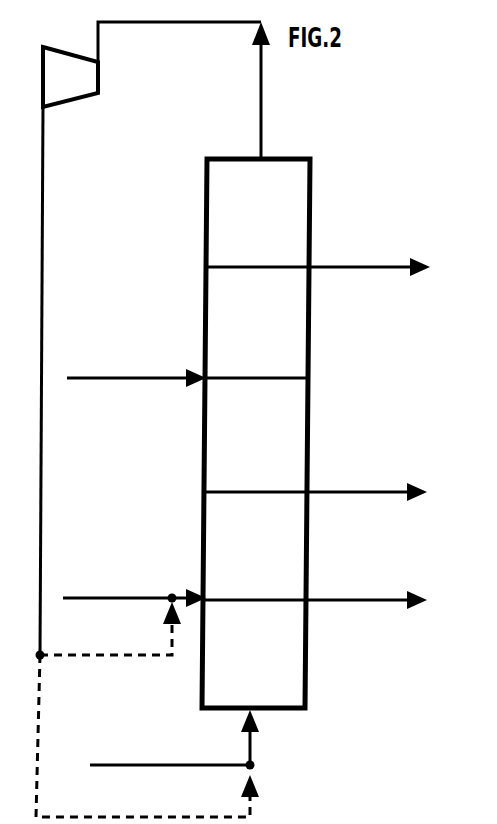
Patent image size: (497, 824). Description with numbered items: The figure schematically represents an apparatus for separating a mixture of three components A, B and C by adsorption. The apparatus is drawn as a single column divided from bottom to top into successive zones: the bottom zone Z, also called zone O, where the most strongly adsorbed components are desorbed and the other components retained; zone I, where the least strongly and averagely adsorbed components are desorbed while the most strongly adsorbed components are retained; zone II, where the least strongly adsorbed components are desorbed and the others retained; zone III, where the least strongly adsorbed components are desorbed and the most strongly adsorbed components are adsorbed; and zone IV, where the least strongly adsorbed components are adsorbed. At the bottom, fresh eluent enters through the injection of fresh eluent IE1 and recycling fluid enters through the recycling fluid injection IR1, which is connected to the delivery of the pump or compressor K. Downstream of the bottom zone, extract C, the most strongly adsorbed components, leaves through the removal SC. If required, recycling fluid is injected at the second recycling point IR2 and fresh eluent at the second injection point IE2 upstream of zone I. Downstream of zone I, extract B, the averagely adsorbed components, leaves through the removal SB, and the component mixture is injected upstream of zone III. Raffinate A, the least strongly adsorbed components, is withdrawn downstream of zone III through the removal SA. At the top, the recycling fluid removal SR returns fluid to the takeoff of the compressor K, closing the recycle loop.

The pump or compressor K is at (70, 77).
The removal of recycling fluid SR is at (184, 90).
The removal of least strongly adsorbed component(s) SA is at (369, 256).
The removal of averagely adsorbed component(s) SB is at (367, 482).
The removal of most strongly adsorbed component(s) SC is at (366, 589).
The injection of fresh eluent IE2 is at (134, 587).
The injection of recycling fluid IR2 is at (109, 631).
The injection of fresh eluent IE1 is at (174, 740).
The recycling fluid injection IR1 is at (147, 736).
The zone IV is at (257, 233).
The zone III is at (256, 344).
The zone II is at (255, 456).
The zone I is at (254, 565).
The zone O Z is at (256, 433).